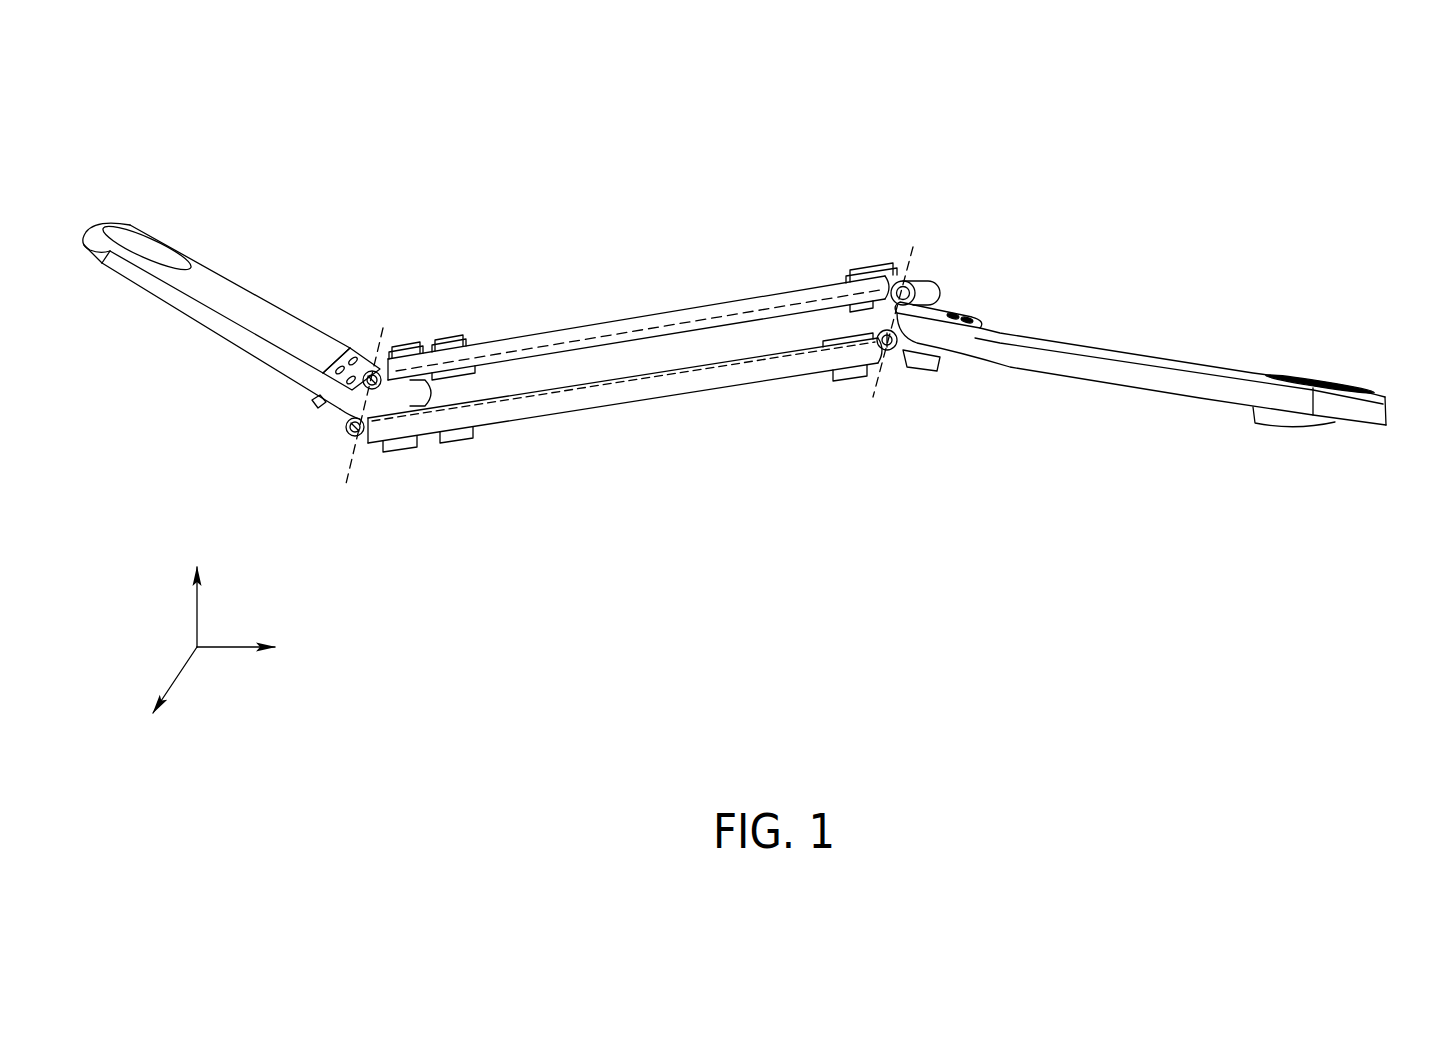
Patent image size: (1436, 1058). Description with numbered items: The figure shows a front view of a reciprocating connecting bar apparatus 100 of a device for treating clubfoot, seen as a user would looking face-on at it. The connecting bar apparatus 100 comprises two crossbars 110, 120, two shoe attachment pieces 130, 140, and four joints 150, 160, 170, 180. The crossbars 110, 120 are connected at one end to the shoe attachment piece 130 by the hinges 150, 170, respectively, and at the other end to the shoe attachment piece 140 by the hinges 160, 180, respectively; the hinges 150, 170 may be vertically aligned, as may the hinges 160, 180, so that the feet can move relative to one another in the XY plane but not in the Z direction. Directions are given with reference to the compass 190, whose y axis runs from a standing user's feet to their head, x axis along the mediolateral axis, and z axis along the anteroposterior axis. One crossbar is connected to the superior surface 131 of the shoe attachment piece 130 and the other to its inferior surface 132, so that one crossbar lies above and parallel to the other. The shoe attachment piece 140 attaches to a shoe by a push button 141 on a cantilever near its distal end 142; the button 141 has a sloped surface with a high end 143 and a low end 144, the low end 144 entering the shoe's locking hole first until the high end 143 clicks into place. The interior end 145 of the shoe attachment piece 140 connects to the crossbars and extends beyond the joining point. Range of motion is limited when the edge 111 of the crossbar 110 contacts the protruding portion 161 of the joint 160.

The connecting bar apparatus 100 is at (515, 190).
The crossbar 110 is at (678, 298).
The edge 111 is at (897, 270).
The crossbar 120 is at (765, 388).
The shoe attachment piece 130 is at (253, 266).
The superior surface 131 is at (325, 328).
The inferior surface 132 is at (202, 332).
The shoe attachment piece 140 is at (1095, 347).
The push button 141 is at (1290, 434).
The distal end 142 is at (1355, 385).
The high end 143 is at (1250, 430).
The low end 144 is at (1335, 431).
The interior end 145 is at (891, 312).
The hinge 150 is at (373, 327).
The hinge 160 is at (960, 307).
The protruding portion 161 is at (933, 285).
The hinge 170 is at (362, 446).
The hinge 180 is at (927, 376).
The compass 190 is at (545, 398).